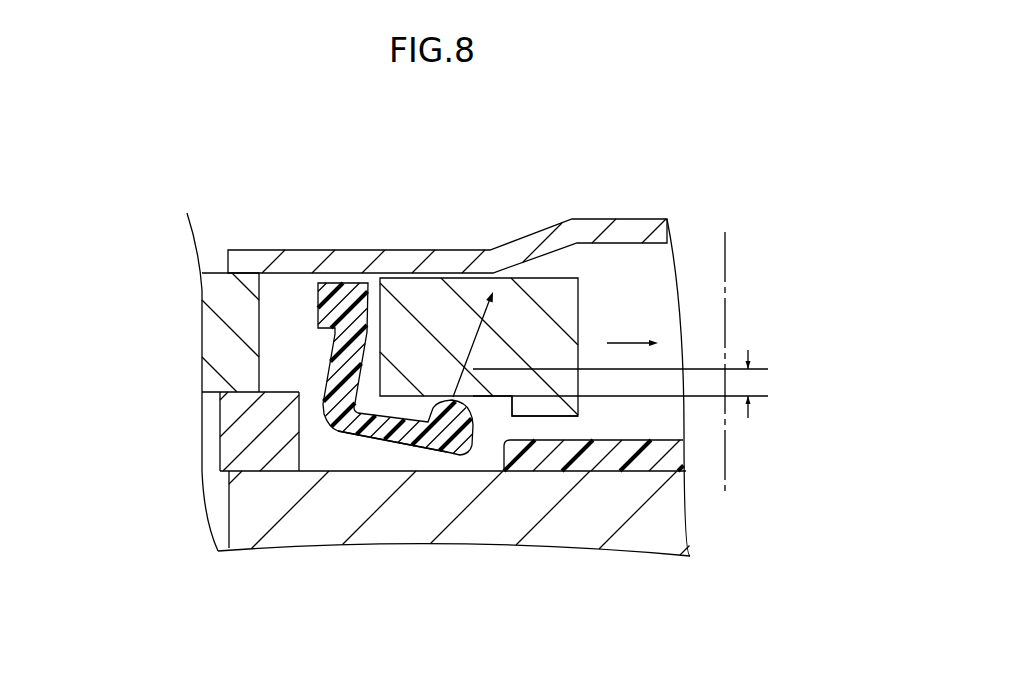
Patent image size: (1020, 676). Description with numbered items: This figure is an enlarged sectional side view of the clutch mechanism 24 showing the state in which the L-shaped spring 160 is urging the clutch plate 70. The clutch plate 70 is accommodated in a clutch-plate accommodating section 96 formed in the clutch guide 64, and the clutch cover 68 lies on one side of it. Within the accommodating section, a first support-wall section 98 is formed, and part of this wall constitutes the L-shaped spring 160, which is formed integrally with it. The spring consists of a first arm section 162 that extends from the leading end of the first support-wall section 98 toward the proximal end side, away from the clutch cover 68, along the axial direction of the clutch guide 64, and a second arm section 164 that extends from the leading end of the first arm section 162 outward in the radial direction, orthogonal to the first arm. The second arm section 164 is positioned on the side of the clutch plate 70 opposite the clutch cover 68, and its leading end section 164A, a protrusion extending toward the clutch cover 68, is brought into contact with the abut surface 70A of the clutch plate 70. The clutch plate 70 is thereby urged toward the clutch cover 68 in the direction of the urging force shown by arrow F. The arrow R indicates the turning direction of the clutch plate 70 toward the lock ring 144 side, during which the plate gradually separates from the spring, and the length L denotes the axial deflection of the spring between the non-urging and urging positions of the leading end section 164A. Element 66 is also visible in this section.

The sealing device assembly 24 is at (404, 188).
The clutch guide 64 is at (622, 478).
The retaining block 66 is at (222, 446).
The clutch cover 68 is at (600, 219).
The clutch plate 70 is at (585, 290).
The abut surface 70A is at (475, 397).
The clutch-plate accommodating section 96 is at (510, 434).
The first support-wall section 98 is at (250, 332).
The lock ring 144 is at (727, 316).
The L-shaped spring 160 is at (343, 281).
The first arm section 162 is at (195, 332).
The second arm section 164 is at (417, 452).
The leading end section 164A is at (433, 400).
The arrow F is at (487, 314).
The arrow R is at (632, 338).
The length L is at (748, 383).